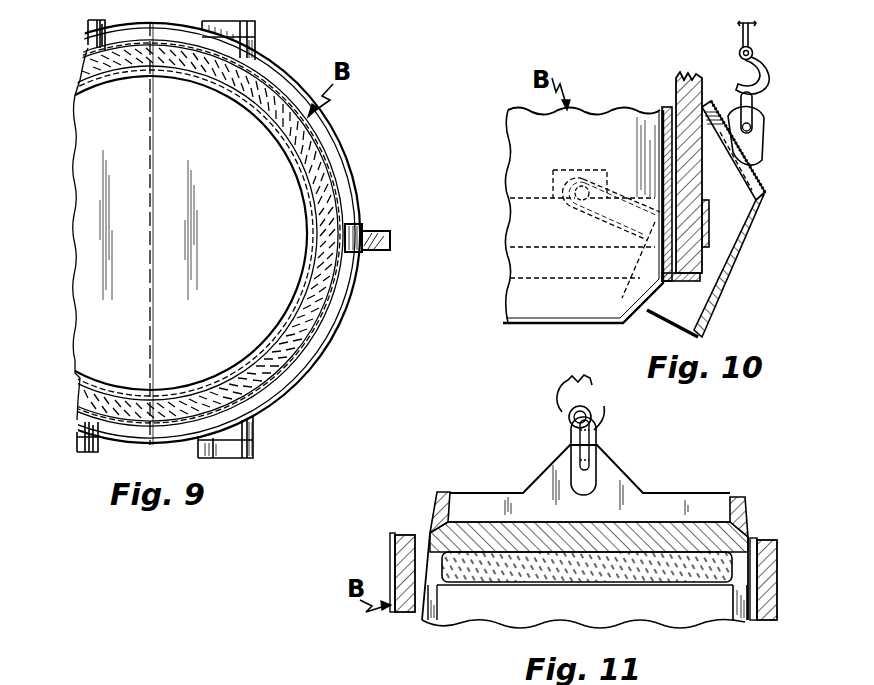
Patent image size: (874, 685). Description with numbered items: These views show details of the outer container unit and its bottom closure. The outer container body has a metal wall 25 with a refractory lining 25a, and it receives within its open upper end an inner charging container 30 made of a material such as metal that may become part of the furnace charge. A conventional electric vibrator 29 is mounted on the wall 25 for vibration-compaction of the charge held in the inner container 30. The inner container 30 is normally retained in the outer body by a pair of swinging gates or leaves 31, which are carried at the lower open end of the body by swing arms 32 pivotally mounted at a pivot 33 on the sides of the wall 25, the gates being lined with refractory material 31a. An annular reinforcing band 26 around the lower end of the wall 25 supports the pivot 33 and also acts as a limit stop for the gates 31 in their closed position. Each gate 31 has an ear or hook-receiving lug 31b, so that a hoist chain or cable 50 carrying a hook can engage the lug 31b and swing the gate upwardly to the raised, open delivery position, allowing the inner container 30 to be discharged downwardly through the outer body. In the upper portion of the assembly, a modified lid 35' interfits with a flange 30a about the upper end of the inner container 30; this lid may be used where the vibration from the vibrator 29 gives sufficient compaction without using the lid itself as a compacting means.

In FIG. 9, the metal wall 25 is at (338, 317).
In FIG. 10, the metal wall 25 is at (703, 82).
In FIG. 11, the metal wall 25 is at (779, 577).
In FIG. 9, the refractory lining 25a is at (313, 255).
In FIG. 10, the refractory lining 25a is at (670, 100).
In FIG. 11, the refractory lining 25a is at (765, 622).
In FIG. 9, the annular reinforcing band 26 is at (332, 138).
In FIG. 10, the annular reinforcing band 26 is at (708, 222).
In FIG. 9, the electric vibrator 29 is at (367, 222).
In FIG. 9, the inner charging container 30 is at (300, 180).
In FIG. 10, the inner charging container 30 is at (533, 330).
In FIG. 11, the inner charging container 30 is at (742, 610).
In FIG. 11, the flange 30a is at (432, 580).
In FIG. 9, the swinging gates or leaves 31 is at (313, 375).
In FIG. 10, the swinging gates or leaves 31 is at (730, 270).
In FIG. 10, the refractory material 31a is at (755, 186).
In FIG. 9, the hoist hook-receiving lug 31b is at (392, 247).
In FIG. 10, the hoist hook-receiving lug 31b is at (753, 142).
In FIG. 9, the swing arms 32 is at (258, 25).
In FIG. 10, the swing arms 32 is at (612, 190).
In FIG. 10, the pivot means 33 is at (584, 173).
In FIG. 11, the modified lid 35' is at (585, 532).
In FIG. 10, the hoist chains or cables 50 is at (748, 33).